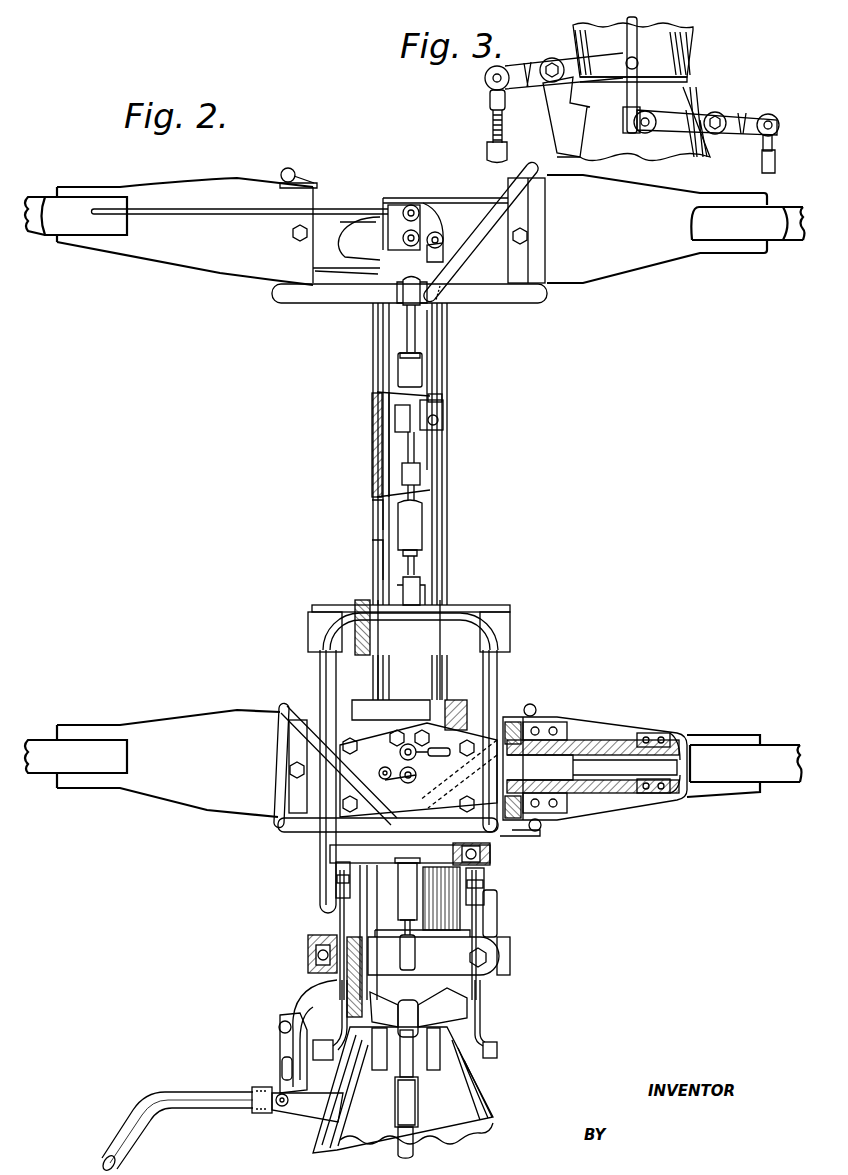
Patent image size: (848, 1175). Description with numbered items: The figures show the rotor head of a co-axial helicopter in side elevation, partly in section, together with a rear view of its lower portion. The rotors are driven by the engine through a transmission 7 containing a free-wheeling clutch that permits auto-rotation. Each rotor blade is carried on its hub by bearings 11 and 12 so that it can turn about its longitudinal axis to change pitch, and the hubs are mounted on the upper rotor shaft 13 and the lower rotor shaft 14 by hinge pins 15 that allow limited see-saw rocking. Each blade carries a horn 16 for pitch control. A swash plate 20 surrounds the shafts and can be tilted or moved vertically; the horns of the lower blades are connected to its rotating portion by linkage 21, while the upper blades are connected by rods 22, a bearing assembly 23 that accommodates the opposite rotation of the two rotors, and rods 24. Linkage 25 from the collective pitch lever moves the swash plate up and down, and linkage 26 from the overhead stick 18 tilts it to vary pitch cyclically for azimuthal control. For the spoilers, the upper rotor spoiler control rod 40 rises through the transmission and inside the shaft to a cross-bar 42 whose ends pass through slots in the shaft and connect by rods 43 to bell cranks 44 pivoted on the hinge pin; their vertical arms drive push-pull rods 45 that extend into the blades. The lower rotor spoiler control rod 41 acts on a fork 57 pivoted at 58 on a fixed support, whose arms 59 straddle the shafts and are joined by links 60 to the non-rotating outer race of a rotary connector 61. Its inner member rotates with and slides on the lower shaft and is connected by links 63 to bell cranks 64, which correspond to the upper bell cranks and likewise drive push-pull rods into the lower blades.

In FIG. 2, the transmission 7 is at (490, 1085).
In FIG. 3, the transmission 7 is at (663, 153).
In FIG. 2, the bearing 11 is at (548, 730).
In FIG. 2, the bearing 12 is at (658, 728).
In FIG. 2, the upper rotor shaft 13 is at (372, 333).
In FIG. 2, the lower rotor shaft 14 is at (450, 838).
In FIG. 2, the hinge pin 15 is at (398, 240).
In FIG. 2, the horn 16 is at (466, 302).
In FIG. 2, the overhead stick 18 is at (143, 1102).
In FIG. 2, the swash plate 20 is at (512, 953).
In FIG. 2, the linkage 21 is at (396, 888).
In FIG. 2, the rod 22 is at (398, 378).
In FIG. 2, the bearing assembly 23 is at (505, 604).
In FIG. 2, the rod 24 is at (320, 678).
In FIG. 2, the linkage 25 is at (395, 1100).
In FIG. 3, the linkage 25 is at (488, 120).
In FIG. 2, the linkage 26 is at (298, 1005).
In FIG. 2, the upper rotor spoiler control rod 40 is at (420, 466).
In FIG. 3, the lower rotor spoiler control rod 41 is at (762, 165).
In FIG. 2, the cross-bar 42 is at (445, 421).
In FIG. 2, the rod 43 is at (437, 368).
In FIG. 2, the bell crank 44 is at (422, 227).
In FIG. 2, the push-pull rod 45 is at (175, 212).
In FIG. 3, the fork 57 is at (748, 118).
In FIG. 3, the pivot 58 is at (715, 113).
In FIG. 3, the arm 59 is at (678, 117).
In FIG. 2, the link 60 is at (342, 1002).
In FIG. 3, the link 60 is at (640, 37).
In FIG. 2, the rotary connector 61 is at (490, 862).
In FIG. 2, the link 63 is at (395, 797).
In FIG. 2, the bell crank 64 is at (400, 760).